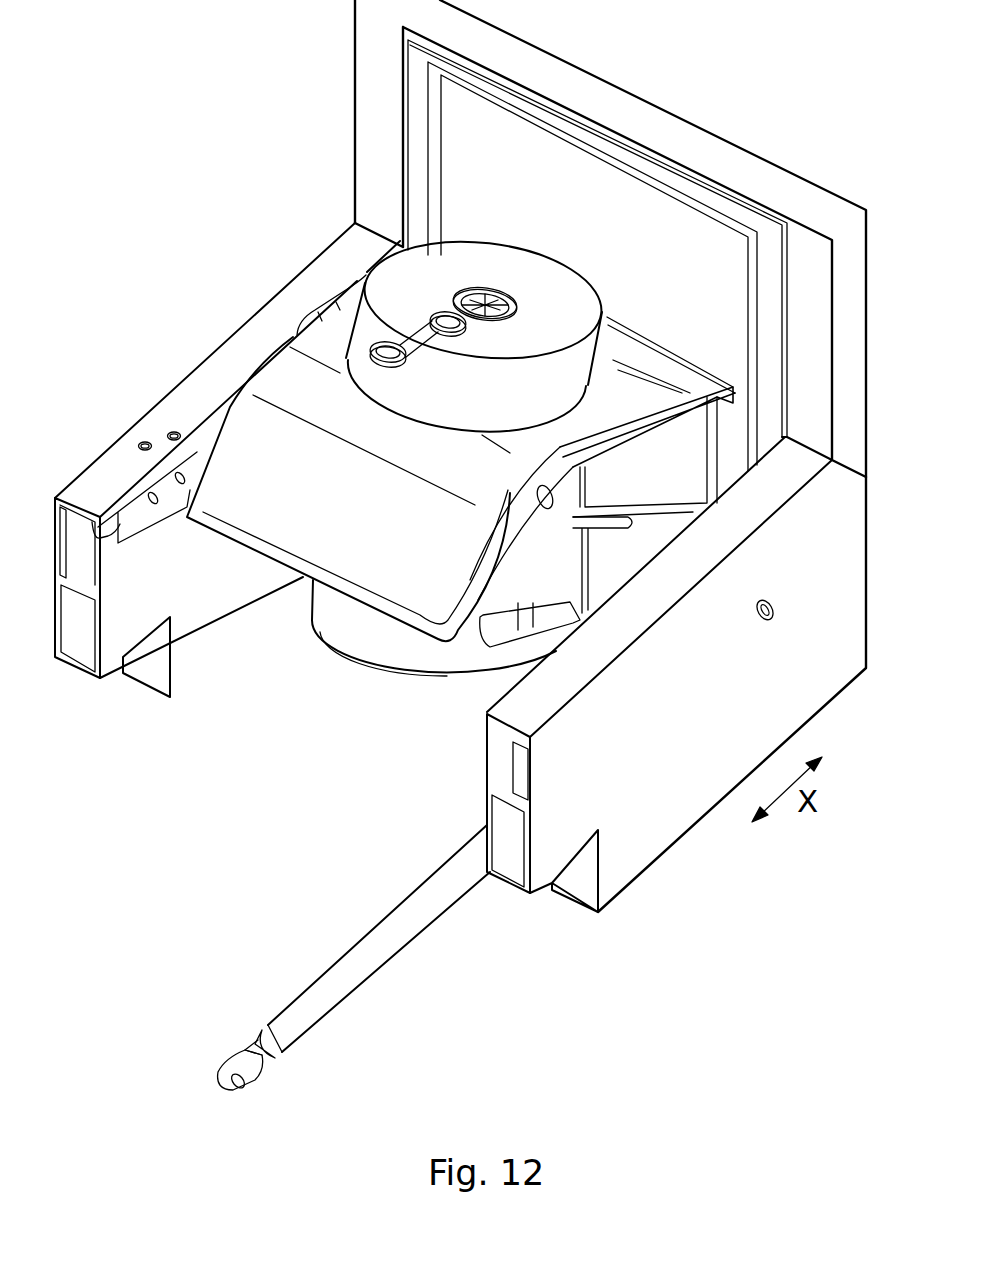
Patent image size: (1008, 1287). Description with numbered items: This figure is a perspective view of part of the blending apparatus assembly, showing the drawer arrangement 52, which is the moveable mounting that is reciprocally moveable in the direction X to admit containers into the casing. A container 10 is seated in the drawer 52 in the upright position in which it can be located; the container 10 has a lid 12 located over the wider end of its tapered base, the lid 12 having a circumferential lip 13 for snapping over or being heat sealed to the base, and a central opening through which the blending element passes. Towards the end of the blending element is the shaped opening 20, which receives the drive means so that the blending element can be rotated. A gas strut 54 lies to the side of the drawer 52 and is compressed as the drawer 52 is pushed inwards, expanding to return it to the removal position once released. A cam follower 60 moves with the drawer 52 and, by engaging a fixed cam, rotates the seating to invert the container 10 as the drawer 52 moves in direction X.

The container 10 is at (461, 433).
The lid 12 is at (368, 265).
The circumferential lip 13 is at (573, 375).
The shaped opening 20 is at (488, 295).
The drawer arrangement 52 is at (252, 296).
The gas strut 54 is at (417, 905).
The cam follower 60 is at (147, 540).